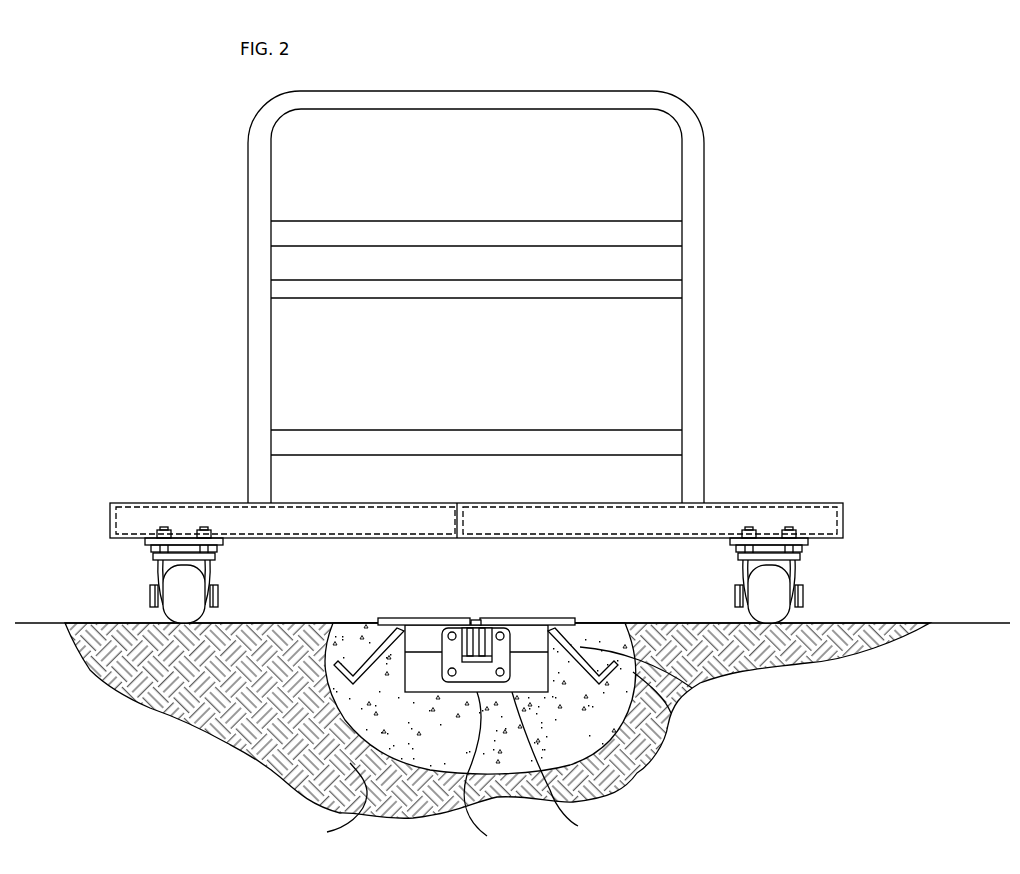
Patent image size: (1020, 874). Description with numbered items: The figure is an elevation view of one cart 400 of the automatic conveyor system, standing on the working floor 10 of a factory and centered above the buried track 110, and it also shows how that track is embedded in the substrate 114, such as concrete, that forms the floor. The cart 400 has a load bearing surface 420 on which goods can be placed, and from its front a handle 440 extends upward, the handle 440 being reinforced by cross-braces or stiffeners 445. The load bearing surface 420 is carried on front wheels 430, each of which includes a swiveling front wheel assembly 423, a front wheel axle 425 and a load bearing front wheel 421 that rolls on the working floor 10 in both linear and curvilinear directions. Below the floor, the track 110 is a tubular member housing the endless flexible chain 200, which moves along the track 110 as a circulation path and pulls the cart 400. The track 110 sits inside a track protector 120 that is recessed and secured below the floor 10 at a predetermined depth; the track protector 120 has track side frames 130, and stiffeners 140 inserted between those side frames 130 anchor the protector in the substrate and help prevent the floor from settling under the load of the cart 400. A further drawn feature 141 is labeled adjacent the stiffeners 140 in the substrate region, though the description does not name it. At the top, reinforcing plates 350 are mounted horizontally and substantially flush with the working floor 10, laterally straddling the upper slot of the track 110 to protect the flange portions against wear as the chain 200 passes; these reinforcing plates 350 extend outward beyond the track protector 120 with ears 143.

The working floor 10 is at (866, 623).
The track 110 is at (620, 797).
The substrate 114 is at (328, 803).
The track protector 120 is at (492, 770).
The track side frames 130 is at (280, 776).
The stiffeners 140 is at (692, 688).
The soil layer boundary 141 is at (671, 713).
The ears 143 is at (618, 632).
The endless flexible chain 200 is at (561, 765).
The reinforcing plates 350 is at (422, 618).
The cart 400 is at (778, 520).
The load bearing surface 420 is at (162, 502).
The load bearing front wheel 421 is at (144, 594).
The swiveling front wheel assembly 423 is at (224, 576).
The front wheel axle 425 is at (222, 593).
The front wheels 430 is at (479, 575).
The handle 440 is at (260, 232).
The cross-braces or stiffeners 445 is at (536, 227).